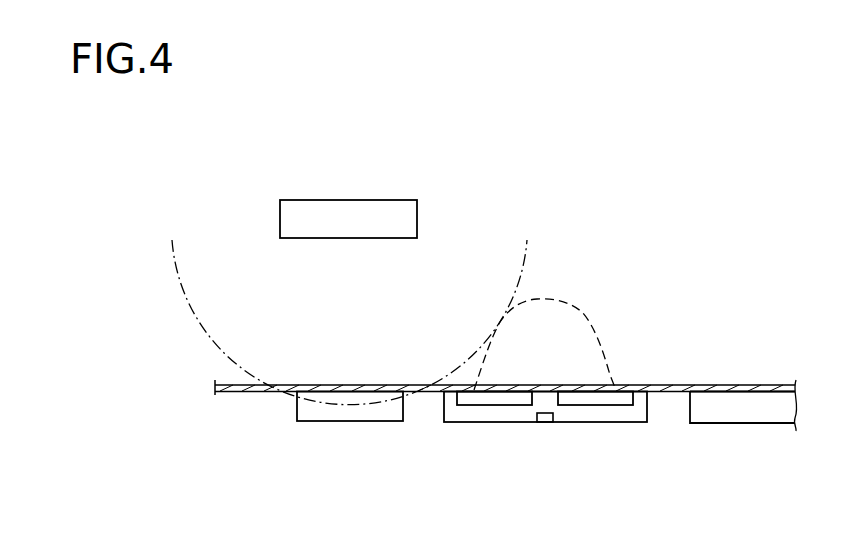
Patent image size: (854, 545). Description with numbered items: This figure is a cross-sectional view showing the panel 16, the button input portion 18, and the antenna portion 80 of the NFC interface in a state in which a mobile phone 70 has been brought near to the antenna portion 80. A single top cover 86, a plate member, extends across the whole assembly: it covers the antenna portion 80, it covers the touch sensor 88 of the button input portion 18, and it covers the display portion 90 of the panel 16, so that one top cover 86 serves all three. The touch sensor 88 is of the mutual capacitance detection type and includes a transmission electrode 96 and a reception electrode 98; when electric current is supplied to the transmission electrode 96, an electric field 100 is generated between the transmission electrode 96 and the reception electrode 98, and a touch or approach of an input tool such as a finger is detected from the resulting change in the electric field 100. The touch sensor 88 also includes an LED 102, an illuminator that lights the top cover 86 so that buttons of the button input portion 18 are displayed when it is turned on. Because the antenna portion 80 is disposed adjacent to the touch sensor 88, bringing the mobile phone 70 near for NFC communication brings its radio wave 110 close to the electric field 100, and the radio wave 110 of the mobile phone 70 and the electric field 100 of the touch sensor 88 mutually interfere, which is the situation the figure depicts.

The panel 16 is at (723, 433).
The button input portion 18 is at (510, 432).
The mobile phone 70 is at (348, 218).
The antenna portion 80 is at (342, 400).
The top cover 86 is at (272, 388).
The touch sensor 88 is at (586, 413).
The display portion 90 is at (769, 410).
The transmission electrode 96 is at (466, 398).
The reception electrode 98 is at (623, 400).
The electric field 100 is at (577, 303).
The LED 102 is at (544, 421).
The radio wave 110 is at (524, 248).